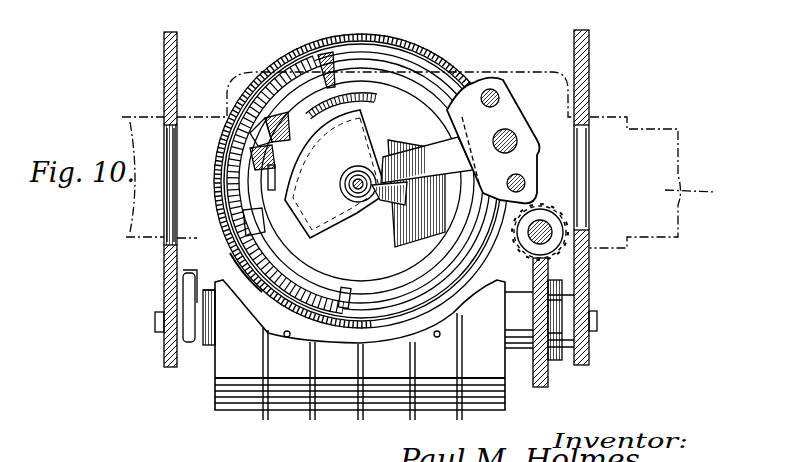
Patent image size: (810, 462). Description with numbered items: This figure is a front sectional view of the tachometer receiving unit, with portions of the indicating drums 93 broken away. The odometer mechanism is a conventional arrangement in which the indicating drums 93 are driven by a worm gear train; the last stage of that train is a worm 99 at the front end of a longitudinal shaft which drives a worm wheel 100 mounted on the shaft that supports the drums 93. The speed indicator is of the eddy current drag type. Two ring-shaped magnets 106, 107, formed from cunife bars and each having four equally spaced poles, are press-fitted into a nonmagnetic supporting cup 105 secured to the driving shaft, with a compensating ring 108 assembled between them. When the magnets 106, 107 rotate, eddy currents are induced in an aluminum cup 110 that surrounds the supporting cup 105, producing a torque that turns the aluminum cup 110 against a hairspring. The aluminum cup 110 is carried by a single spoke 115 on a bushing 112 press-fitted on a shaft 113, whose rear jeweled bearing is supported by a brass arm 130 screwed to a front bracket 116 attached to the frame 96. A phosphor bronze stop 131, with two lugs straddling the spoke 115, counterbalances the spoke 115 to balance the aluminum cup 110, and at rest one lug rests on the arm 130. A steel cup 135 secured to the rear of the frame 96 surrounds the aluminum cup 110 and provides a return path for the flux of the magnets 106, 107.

The indicating drums 93 is at (352, 410).
The frame 96 is at (163, 72).
The worm 99 is at (553, 212).
The worm wheel 100 is at (543, 388).
The supporting cup 105 is at (335, 65).
The ring magnet 106 is at (258, 173).
The ring magnet 107 is at (283, 98).
The compensating ring 108 is at (258, 133).
The aluminum cup 110 is at (398, 72).
The bushing 112 is at (352, 183).
The shaft 113 is at (360, 170).
The spoke 115 is at (314, 233).
The front bracket 116 is at (436, 160).
The brass arm 130 is at (404, 148).
The stop 131 is at (232, 253).
The steel cup 135 is at (282, 65).